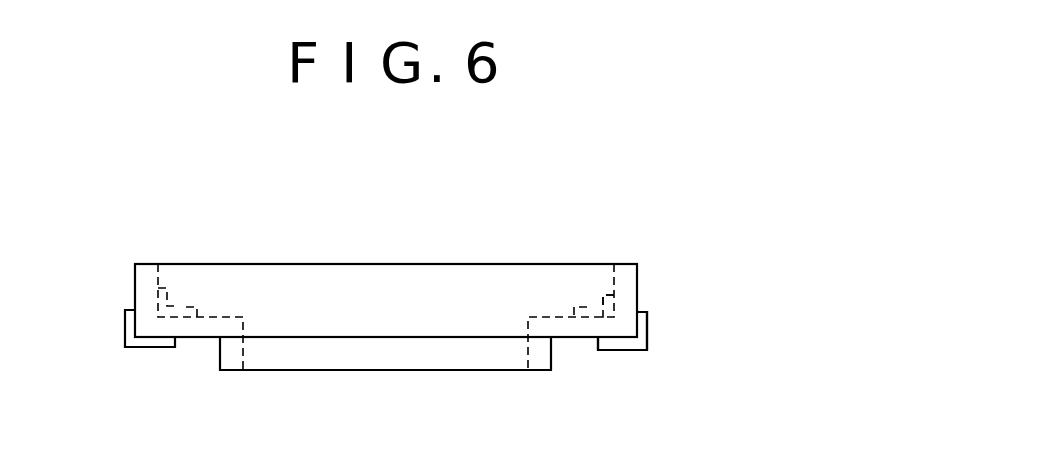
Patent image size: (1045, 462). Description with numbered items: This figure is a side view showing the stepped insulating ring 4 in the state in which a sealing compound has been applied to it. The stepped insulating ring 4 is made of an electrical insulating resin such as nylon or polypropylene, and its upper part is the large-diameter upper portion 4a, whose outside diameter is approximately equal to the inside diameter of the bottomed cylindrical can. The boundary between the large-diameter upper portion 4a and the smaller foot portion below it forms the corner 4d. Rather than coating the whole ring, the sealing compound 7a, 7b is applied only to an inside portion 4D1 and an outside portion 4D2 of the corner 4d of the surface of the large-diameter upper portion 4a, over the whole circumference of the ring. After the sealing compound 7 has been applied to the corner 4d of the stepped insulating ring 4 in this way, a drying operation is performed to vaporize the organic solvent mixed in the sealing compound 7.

The stepped insulating ring 4 is at (688, 186).
The large-diameter upper portion 4a is at (628, 274).
The corner 4d is at (650, 358).
The inside portion 4D1 is at (596, 315).
The outside portion 4D2 is at (613, 350).
The sealing compound 7 is at (729, 277).
The sealing compound 7a is at (615, 298).
The sealing compound 7b is at (641, 328).